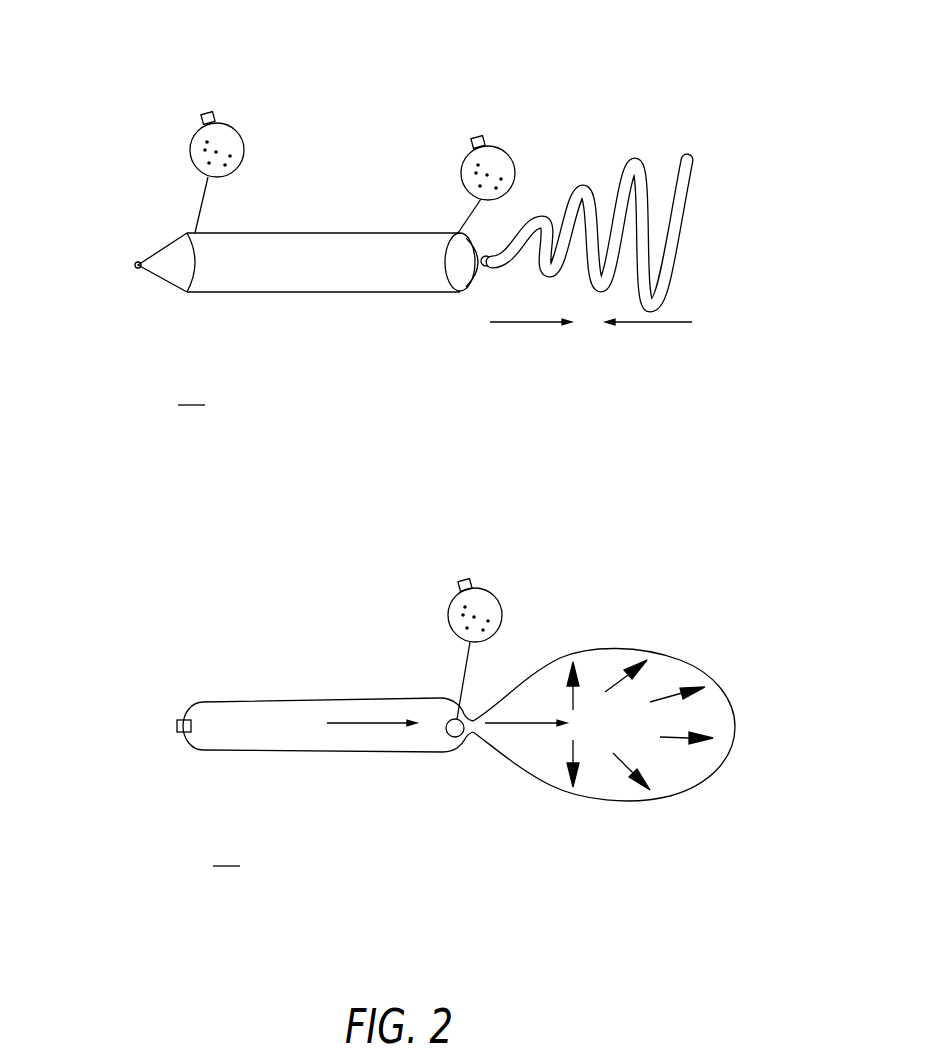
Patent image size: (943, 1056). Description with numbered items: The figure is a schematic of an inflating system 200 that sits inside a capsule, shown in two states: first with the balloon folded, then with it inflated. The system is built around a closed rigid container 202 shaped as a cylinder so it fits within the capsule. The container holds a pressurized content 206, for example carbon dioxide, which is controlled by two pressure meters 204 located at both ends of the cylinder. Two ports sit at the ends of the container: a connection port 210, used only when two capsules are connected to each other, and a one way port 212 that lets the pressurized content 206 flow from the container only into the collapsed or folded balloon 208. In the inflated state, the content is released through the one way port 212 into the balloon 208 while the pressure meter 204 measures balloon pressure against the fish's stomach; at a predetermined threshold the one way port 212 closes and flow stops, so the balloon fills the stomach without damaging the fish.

The inflating system 200 is at (95, 32).
The closed rigid container 202 is at (296, 233).
The pressure meter 204 is at (503, 150).
The pressurized content 206 is at (292, 272).
The balloon 208 is at (693, 155).
The connection port 210 is at (138, 265).
The one way port 212 is at (488, 268).